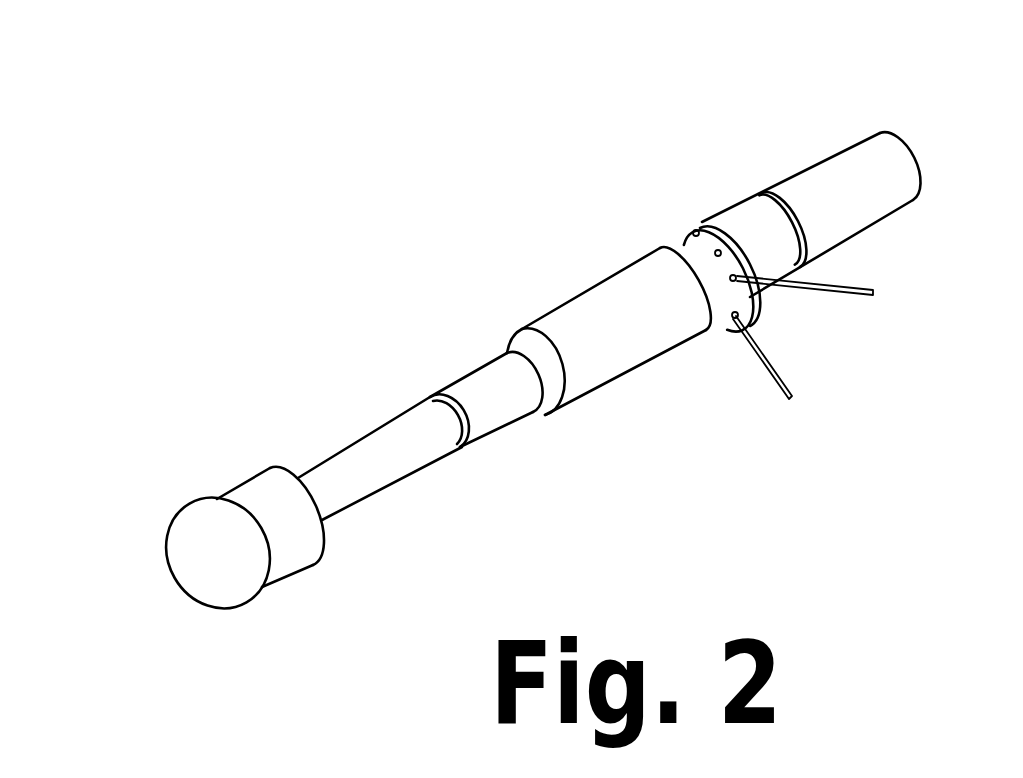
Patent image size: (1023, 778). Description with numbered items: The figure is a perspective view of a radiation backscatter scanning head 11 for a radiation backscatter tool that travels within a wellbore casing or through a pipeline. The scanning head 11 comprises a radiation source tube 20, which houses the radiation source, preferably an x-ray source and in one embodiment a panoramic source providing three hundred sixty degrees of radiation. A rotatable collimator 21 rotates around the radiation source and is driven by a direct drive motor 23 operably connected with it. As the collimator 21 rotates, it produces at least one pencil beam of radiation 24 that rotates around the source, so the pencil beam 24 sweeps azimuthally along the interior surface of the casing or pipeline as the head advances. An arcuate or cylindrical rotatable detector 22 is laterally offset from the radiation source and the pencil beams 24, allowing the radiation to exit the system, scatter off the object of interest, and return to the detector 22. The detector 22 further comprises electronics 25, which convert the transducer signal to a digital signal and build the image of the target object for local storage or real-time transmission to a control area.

The radiation backscatter scanning head 11 is at (390, 224).
The radiation source tube 20 is at (882, 217).
The rotatable collimator 21 is at (692, 232).
The rotatable detector 22 is at (610, 383).
The direct drive motor 23 is at (757, 200).
The pencil beam of radiation 24 is at (850, 295).
The electronics 25 is at (413, 477).